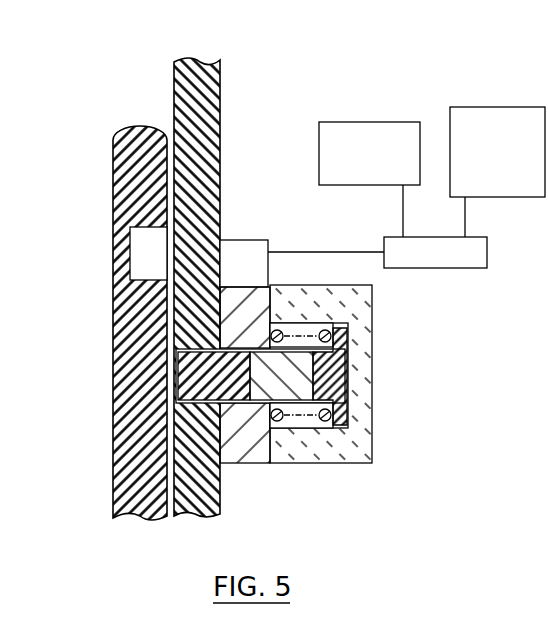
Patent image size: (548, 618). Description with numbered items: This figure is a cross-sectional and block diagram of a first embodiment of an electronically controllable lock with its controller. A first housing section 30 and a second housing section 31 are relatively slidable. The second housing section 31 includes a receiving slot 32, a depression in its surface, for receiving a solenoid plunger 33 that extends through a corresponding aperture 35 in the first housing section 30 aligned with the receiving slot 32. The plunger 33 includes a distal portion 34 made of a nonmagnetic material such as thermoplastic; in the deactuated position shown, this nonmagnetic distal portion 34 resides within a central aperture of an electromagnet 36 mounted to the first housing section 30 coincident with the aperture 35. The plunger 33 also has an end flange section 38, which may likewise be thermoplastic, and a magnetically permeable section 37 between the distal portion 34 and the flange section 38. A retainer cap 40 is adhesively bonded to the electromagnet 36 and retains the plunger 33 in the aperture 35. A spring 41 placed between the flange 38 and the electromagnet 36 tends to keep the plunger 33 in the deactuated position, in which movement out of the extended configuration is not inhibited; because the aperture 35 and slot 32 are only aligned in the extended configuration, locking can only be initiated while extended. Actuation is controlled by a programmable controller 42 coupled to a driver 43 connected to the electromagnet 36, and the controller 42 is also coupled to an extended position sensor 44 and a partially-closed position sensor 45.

The first housing section 30 is at (207, 518).
The second housing section 31 is at (113, 464).
The receiving slot 32 is at (128, 262).
The solenoid plunger 33 is at (348, 362).
The distal portion 34 is at (232, 403).
The aperture 35 is at (195, 402).
The electromagnet 36 is at (250, 308).
The magnetically permeable section 37 is at (298, 402).
The end flange section 38 is at (343, 402).
The retainer cap 40 is at (367, 324).
The spring 41 is at (292, 335).
The programmable controller 42 is at (415, 268).
The driver 43 is at (238, 242).
The extended position sensor 44 is at (318, 152).
The partially-closed position sensor 45 is at (507, 107).